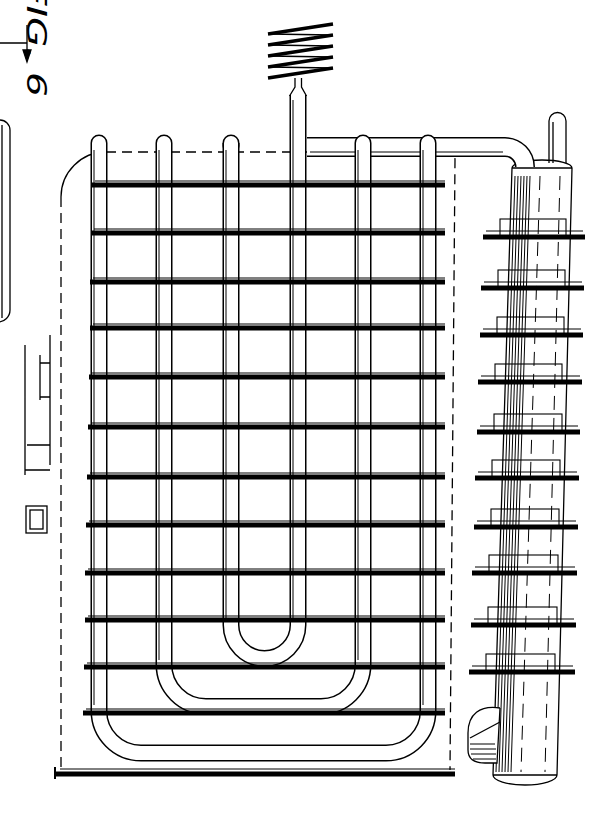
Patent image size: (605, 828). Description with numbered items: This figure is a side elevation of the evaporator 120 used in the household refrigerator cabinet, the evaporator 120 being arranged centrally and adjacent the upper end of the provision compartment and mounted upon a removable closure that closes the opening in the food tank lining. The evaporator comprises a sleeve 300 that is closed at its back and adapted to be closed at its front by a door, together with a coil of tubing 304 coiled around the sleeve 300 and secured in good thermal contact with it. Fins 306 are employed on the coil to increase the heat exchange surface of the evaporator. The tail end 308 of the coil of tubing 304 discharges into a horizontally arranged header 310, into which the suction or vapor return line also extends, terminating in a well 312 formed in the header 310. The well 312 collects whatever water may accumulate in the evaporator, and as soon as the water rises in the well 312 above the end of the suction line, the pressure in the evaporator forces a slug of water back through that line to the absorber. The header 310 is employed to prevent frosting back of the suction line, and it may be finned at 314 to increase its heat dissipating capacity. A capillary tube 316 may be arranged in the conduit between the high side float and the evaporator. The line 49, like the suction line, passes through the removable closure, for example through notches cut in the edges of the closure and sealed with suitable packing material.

The evaporator 120 is at (130, 588).
The sleeve 300 is at (61, 688).
The coil of tubing 304 is at (92, 214).
The fins 306 is at (145, 231).
The tail end 308 is at (458, 144).
The header 310 is at (493, 707).
The well 312 is at (484, 761).
The fins of header 314 is at (483, 478).
The capillary tube 316 is at (338, 52).
The line 49 is at (547, 135).